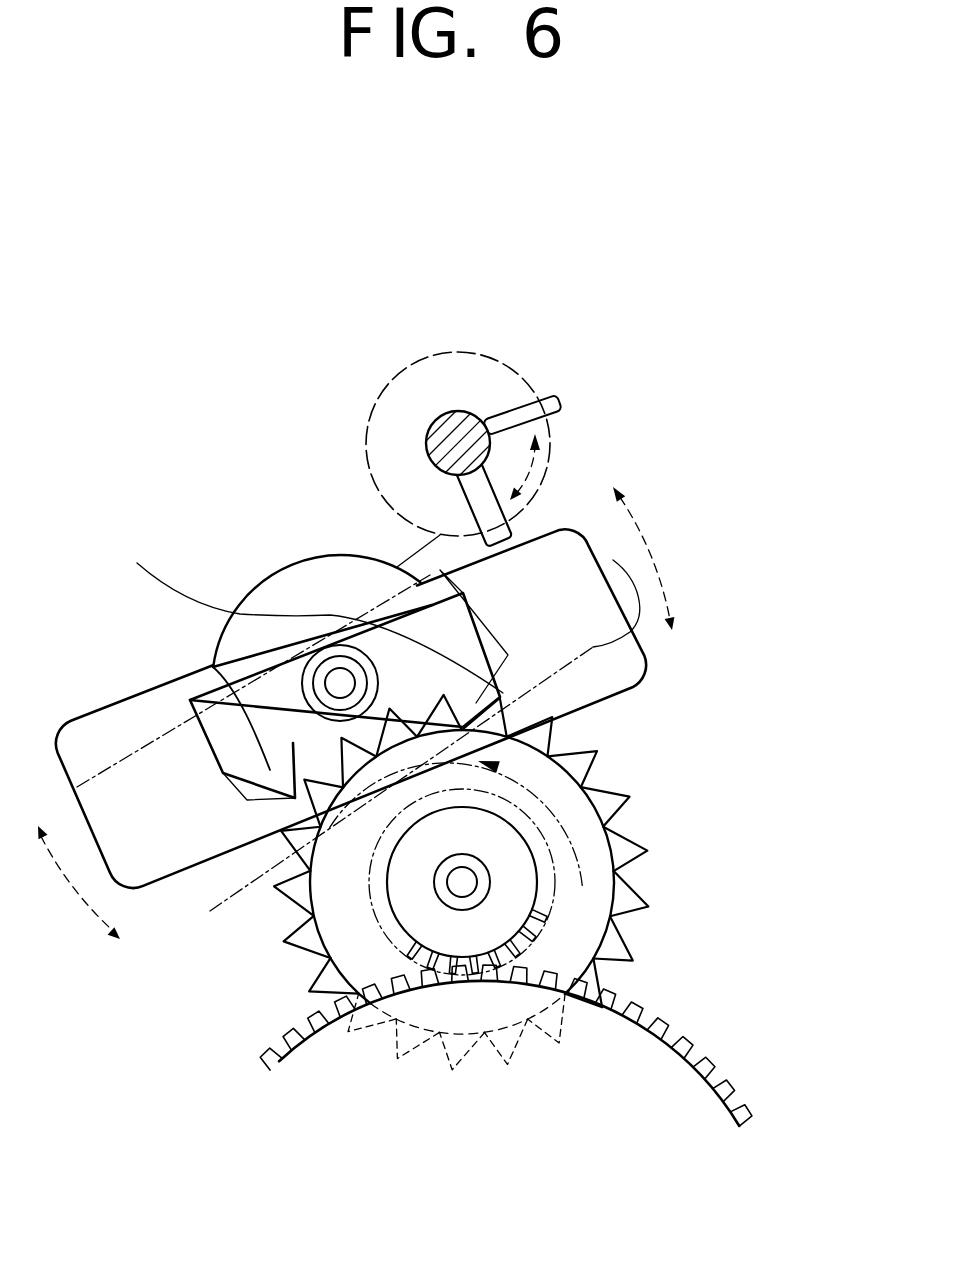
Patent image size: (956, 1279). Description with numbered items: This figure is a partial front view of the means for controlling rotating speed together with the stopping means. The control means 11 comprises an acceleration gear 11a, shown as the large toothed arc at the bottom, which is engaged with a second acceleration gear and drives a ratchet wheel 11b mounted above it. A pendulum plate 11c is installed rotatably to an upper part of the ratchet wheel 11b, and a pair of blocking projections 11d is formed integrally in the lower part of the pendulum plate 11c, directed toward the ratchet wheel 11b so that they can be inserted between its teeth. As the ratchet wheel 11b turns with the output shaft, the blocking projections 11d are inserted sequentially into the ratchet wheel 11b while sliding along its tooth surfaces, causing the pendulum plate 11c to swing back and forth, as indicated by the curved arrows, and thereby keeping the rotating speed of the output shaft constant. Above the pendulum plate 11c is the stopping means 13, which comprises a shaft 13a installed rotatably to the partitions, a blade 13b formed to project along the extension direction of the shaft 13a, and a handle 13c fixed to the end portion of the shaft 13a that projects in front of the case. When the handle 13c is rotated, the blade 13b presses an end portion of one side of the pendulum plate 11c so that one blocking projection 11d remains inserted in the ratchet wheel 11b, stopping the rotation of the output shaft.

The control means 11 is at (708, 746).
The acceleration gear 11a is at (672, 1008).
The ratchet wheel 11b is at (640, 846).
The pendulum plate 11c is at (585, 587).
The blocking projections 11d is at (213, 667).
The stopping means 13 is at (362, 380).
The shaft 13a is at (455, 426).
The blade 13b is at (477, 500).
The handle 13c is at (497, 360).